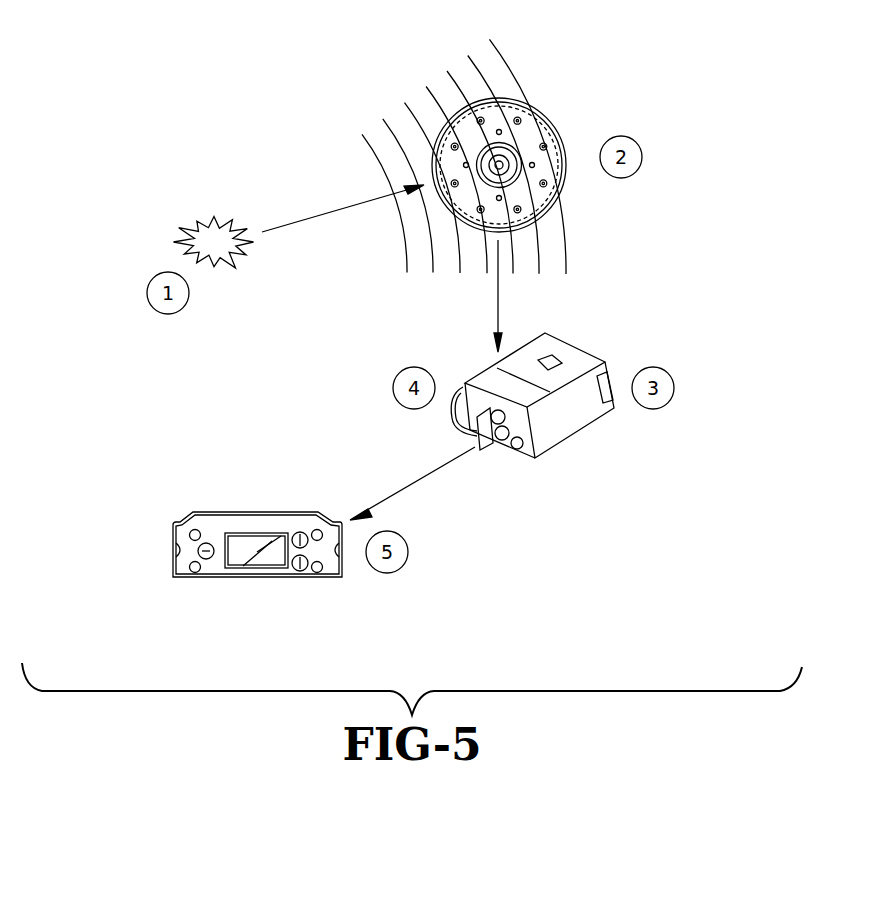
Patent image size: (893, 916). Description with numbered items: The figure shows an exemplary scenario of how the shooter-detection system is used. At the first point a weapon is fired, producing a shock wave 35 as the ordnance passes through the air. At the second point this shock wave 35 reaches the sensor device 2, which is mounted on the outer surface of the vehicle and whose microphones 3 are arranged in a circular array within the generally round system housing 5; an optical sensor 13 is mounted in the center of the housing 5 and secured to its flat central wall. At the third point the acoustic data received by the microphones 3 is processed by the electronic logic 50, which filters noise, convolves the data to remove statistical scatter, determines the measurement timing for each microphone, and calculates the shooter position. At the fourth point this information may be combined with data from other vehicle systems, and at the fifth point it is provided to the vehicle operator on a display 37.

The sensor device 2 is at (534, 136).
The system housing 5 is at (534, 136).
The microphones 3 is at (478, 116).
The optical sensor 13 is at (530, 192).
The shock wave 35 is at (510, 50).
The display 37 is at (253, 518).
The electronic logic 50 is at (572, 425).